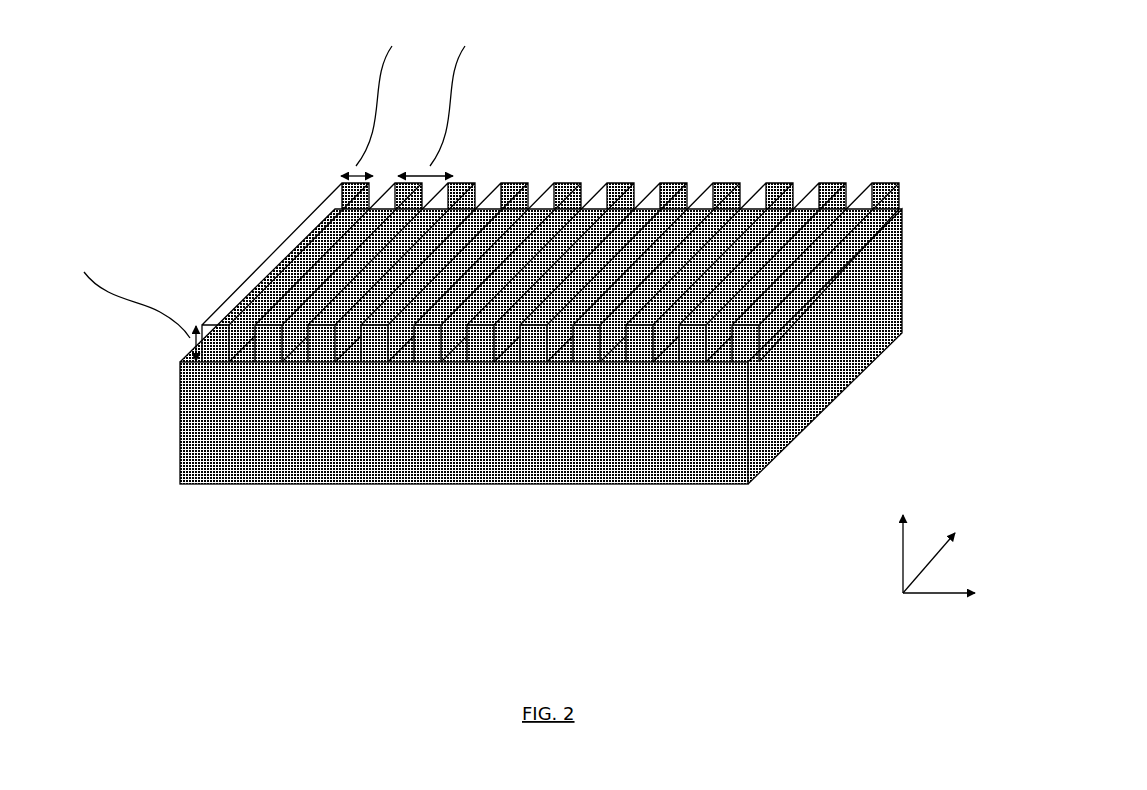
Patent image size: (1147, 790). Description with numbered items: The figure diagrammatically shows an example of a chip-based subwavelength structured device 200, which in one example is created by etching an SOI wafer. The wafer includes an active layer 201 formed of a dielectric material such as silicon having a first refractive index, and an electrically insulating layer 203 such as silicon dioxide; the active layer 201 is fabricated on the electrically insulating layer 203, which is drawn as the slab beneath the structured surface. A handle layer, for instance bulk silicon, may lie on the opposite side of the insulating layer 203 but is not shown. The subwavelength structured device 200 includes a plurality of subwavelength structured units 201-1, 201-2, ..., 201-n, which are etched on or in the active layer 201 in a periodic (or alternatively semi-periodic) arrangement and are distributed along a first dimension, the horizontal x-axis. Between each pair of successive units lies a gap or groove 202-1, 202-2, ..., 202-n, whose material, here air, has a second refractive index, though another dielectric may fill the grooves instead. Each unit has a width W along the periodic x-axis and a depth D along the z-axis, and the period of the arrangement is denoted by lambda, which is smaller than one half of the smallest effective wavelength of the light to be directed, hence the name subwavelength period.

The chip-based subwavelength structured device 200 is at (1013, 90).
The active layer 201 is at (567, 177).
The subwavelength structured unit 201-1 is at (883, 188).
The subwavelength structured unit 201-2 is at (827, 185).
The subwavelength structured unit 201-n is at (335, 200).
The gap or groove 202-1 is at (723, 350).
The gap or groove 202-2 is at (668, 350).
The gap or groove 202-n is at (240, 358).
The electrically insulating layer 203 is at (486, 487).